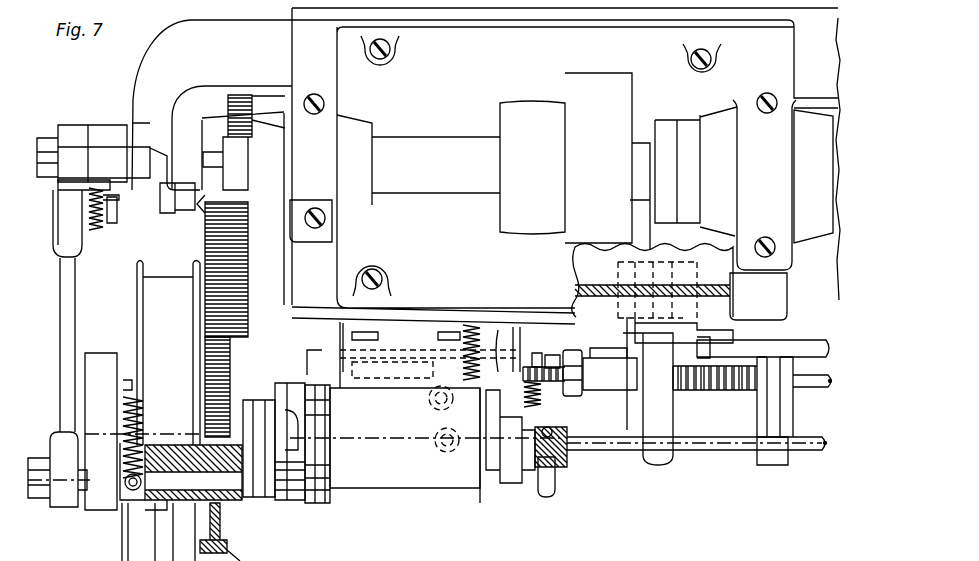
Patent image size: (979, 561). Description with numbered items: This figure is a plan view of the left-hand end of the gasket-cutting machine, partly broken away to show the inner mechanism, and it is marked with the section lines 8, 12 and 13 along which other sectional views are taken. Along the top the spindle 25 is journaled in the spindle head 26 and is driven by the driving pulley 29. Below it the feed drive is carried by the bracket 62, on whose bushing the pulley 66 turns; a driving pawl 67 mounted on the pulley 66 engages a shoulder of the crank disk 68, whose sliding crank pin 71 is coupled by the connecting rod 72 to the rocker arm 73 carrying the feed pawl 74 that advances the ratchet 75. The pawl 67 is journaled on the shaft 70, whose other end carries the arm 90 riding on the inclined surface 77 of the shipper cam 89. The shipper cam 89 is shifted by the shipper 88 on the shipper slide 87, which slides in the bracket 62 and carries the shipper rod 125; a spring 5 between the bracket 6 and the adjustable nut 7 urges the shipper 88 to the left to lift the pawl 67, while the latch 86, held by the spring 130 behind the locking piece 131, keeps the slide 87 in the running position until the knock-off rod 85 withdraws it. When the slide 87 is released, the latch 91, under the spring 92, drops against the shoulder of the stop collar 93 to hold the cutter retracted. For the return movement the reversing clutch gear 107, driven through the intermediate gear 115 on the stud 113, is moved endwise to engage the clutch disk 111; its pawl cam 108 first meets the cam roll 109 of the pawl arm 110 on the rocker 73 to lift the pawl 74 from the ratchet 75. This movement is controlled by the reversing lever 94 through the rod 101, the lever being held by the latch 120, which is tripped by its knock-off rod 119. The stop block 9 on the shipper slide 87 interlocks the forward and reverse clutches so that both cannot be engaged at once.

The spring 5 is at (698, 390).
The bracket 6 is at (760, 407).
The adjustable nut 7 is at (582, 388).
The section line 8 is at (23, 478).
The stop block 9 is at (405, 367).
The section line 12 is at (256, 100).
The section line 13 is at (123, 367).
The spindle 25 is at (418, 160).
The spindle head 26 is at (546, 166).
The driving pulley 29 is at (532, 167).
The bracket 62 is at (405, 438).
The pulley 66 is at (161, 411).
The driving pawl 67 is at (130, 491).
The crank disk 68 is at (108, 431).
The shaft 70 is at (193, 477).
The crank pin 71 is at (62, 489).
The connecting rod 72 is at (60, 372).
The rocker arm 73 is at (73, 236).
The feed pawl 74 is at (58, 183).
The ratchet 75 is at (78, 135).
The inclined surface 77 is at (290, 385).
The knock-off rod 85 is at (633, 450).
The latch 86 is at (480, 480).
The shipper slide 87 is at (395, 348).
The shipper 88 is at (333, 338).
The shipper cam 89 is at (291, 497).
The arm 90 is at (266, 500).
The latch 91 is at (478, 420).
The spring 92 is at (545, 394).
The stop collar 93 is at (517, 476).
The reversing lever 94 is at (648, 391).
The rod 101 is at (595, 356).
The reversing clutch gear 107 is at (242, 95).
The pawl cam 108 is at (200, 113).
The cam roll 109 is at (196, 206).
The pawl arm 110 is at (158, 152).
The clutch disk 111 is at (187, 130).
The stud 113 is at (249, 272).
The intermediate gear 115 is at (205, 255).
The knock-off rod 119 is at (787, 350).
The latch 120 is at (665, 330).
The shipper rod 125 is at (817, 388).
The spring 130 is at (478, 325).
The locking piece 131 is at (543, 408).